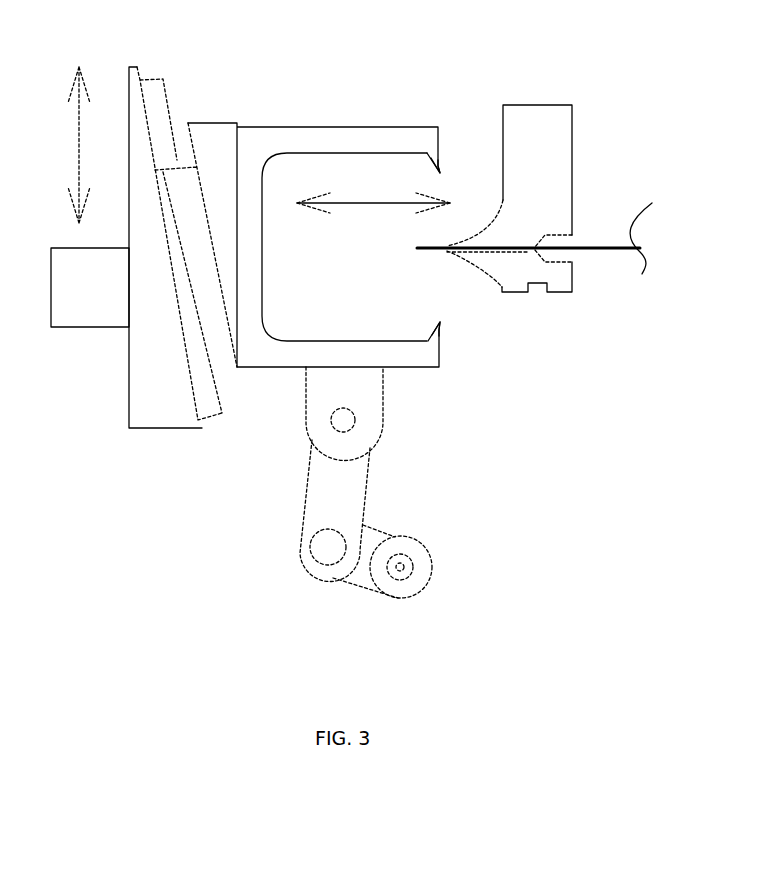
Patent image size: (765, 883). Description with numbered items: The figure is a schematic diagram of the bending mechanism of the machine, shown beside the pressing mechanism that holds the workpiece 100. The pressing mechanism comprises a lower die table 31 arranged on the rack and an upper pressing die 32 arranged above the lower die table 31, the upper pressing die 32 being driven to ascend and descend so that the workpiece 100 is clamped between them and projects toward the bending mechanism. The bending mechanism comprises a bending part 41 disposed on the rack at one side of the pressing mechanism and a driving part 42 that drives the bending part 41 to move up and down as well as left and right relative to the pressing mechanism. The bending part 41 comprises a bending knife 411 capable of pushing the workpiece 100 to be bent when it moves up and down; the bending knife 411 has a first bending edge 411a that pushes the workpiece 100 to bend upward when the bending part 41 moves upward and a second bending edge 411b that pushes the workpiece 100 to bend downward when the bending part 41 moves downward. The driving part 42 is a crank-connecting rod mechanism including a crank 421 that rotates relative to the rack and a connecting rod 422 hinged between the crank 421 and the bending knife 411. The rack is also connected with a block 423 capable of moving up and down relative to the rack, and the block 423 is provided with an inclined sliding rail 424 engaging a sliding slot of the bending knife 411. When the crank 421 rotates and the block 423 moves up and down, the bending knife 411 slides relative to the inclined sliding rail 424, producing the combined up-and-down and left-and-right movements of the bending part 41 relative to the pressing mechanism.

The bending part 41 is at (368, 219).
The bending knife 411 is at (325, 142).
The first bending edge 411a is at (440, 322).
The second bending edge 411b is at (441, 172).
The driving part 42 is at (301, 482).
The crank 421 is at (380, 550).
The connecting rod 422 is at (353, 495).
The block 423 is at (157, 333).
The inclined sliding rail 424 is at (198, 320).
The lower die table 31 is at (575, 250).
The upper pressing die 32 is at (533, 222).
The workpiece 100 is at (522, 268).